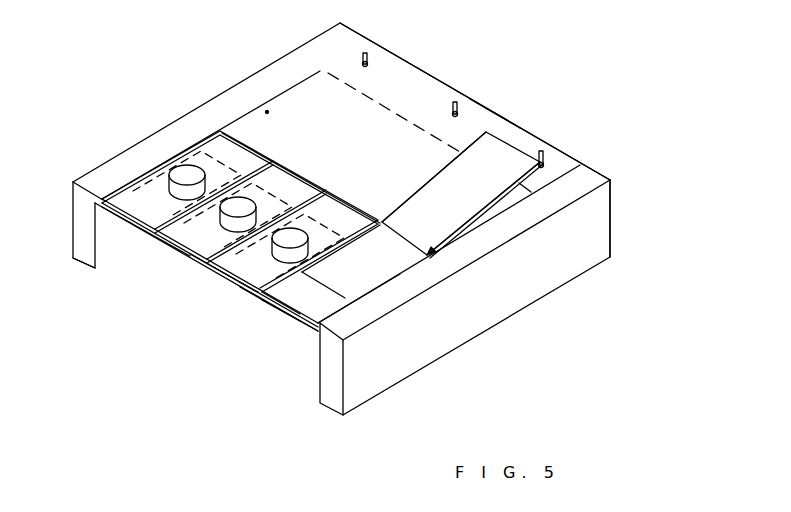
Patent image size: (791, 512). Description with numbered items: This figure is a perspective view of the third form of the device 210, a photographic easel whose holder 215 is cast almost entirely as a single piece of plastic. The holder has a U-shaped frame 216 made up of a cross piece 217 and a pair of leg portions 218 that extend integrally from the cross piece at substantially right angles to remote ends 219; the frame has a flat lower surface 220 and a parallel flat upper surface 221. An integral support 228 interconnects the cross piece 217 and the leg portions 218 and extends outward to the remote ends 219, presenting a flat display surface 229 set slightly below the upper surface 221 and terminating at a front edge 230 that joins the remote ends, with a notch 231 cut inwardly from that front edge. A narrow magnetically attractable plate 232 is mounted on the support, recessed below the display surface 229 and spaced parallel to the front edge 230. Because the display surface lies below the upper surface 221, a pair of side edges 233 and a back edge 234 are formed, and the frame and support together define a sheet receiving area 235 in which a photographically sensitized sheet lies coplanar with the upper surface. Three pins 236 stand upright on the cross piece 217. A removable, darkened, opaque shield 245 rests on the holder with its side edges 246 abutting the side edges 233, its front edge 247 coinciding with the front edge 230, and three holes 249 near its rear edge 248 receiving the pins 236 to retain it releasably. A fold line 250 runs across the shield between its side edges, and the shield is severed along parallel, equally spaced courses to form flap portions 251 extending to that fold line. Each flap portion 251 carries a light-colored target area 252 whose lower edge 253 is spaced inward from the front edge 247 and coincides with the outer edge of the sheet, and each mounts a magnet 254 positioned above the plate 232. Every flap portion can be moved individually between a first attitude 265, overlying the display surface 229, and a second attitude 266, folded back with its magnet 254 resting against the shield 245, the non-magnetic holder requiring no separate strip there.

The device 210 is at (618, 144).
The holder 215 is at (183, 99).
The U-shaped frame 216 is at (572, 253).
The cross piece 217 is at (415, 83).
The leg portions 218 is at (140, 142).
The remote ends 219 is at (83, 240).
The lower surface 220 is at (72, 262).
The upper surface 221 is at (182, 133).
The support 228 is at (263, 305).
The display surface 229 is at (397, 263).
The front edge 230 is at (291, 320).
The notch 231 is at (203, 258).
The magnetically attractable plate 232 is at (353, 284).
The side edges 233 is at (127, 180).
The back edge 234 is at (383, 108).
The sheet receiving area 235 is at (310, 313).
The pins 236 is at (365, 52).
The shield 245 is at (267, 112).
The side edges 246 is at (270, 103).
The front edge 247 is at (250, 291).
The rear edge 248 is at (498, 110).
The holes 249 is at (405, 72).
The fold line 250 is at (333, 194).
The flap portions 251 is at (229, 166).
The target area 252 is at (306, 192).
The lower edge 253 is at (128, 227).
The magnet 254 is at (180, 196).
The first attitude 265 is at (272, 287).
The second attitude 266 is at (452, 167).